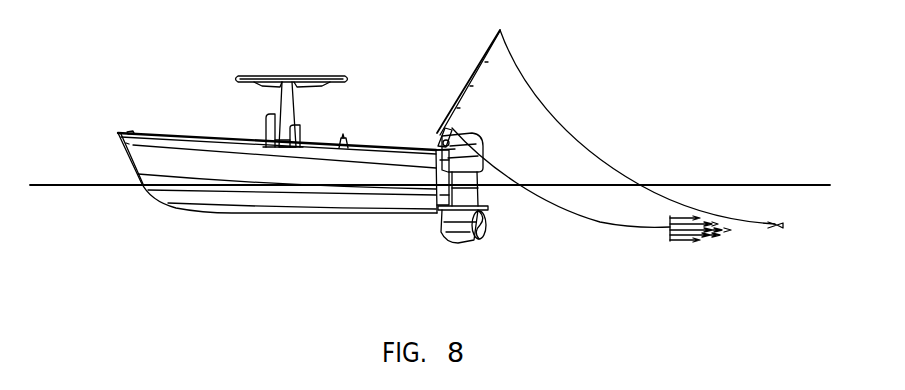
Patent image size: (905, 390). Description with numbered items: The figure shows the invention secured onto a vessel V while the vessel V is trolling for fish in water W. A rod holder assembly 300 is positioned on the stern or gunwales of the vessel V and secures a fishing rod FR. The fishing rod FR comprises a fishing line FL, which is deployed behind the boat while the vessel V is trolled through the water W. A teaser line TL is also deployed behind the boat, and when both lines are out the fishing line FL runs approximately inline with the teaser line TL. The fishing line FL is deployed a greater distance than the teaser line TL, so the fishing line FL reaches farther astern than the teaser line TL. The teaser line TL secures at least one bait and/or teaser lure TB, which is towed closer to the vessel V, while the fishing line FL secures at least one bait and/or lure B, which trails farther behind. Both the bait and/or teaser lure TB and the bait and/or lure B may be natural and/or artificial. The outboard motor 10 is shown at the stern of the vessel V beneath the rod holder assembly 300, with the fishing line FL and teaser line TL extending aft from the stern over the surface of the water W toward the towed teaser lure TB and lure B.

The vessel V is at (308, 66).
The water W is at (72, 185).
The rod holder assembly 300 is at (430, 137).
The fishing rod FR is at (470, 58).
The outboard motor 10 is at (458, 120).
The fishing line FL is at (561, 117).
The teaser line TL is at (506, 171).
The bait and/or teaser lure TB is at (692, 250).
The bait and/or lure B is at (778, 222).